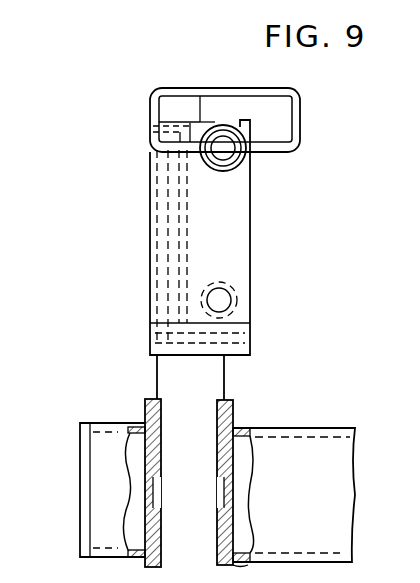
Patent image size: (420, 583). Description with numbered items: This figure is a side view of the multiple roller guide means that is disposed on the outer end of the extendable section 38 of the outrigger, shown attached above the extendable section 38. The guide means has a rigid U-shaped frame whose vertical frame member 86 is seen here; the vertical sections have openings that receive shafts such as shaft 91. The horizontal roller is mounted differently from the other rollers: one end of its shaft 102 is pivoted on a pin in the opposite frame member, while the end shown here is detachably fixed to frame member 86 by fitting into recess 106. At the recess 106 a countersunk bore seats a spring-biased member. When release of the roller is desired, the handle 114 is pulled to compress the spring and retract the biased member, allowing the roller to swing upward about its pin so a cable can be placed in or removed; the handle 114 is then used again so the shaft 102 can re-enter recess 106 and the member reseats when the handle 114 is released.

The extendable section 38 is at (317, 427).
The frame member 86 is at (250, 250).
The shaft 91 is at (222, 300).
The shaft 102 is at (226, 150).
The recess 106 is at (212, 124).
The handle 114 is at (300, 131).